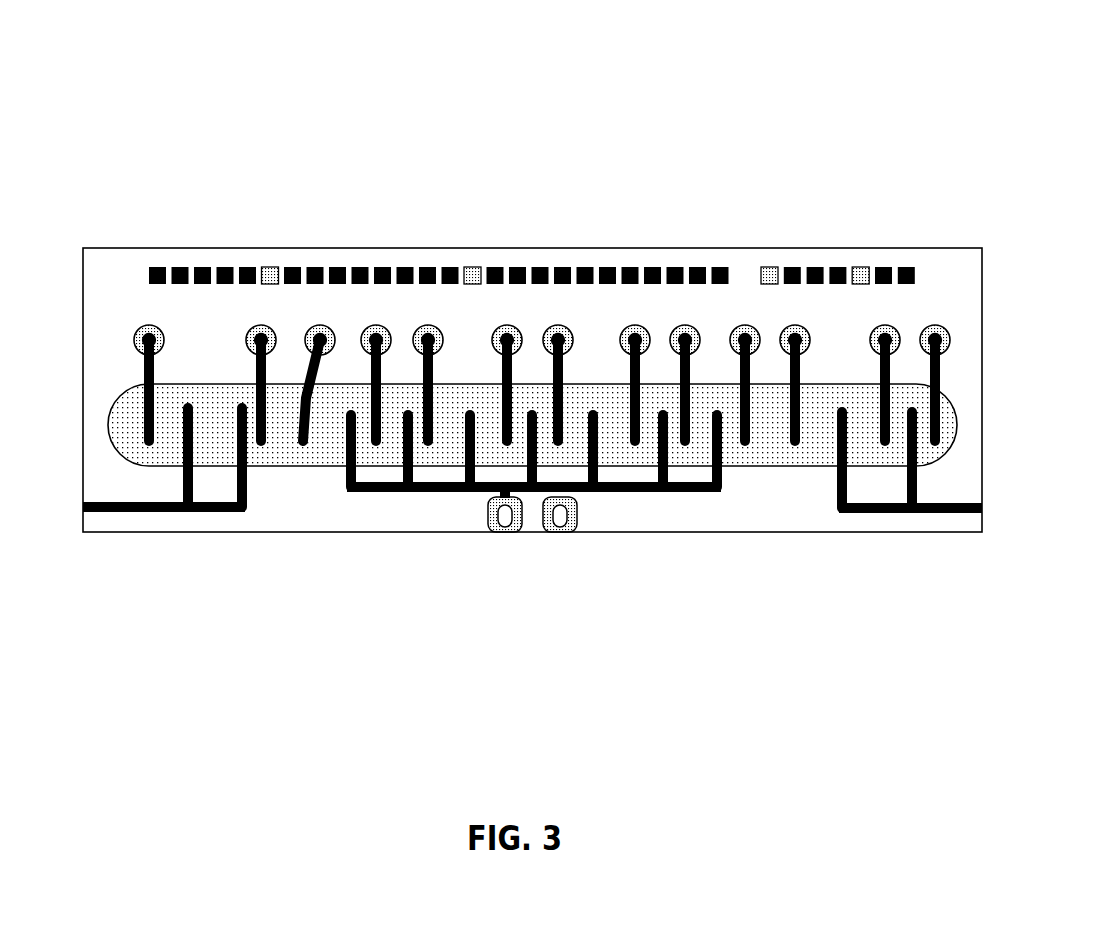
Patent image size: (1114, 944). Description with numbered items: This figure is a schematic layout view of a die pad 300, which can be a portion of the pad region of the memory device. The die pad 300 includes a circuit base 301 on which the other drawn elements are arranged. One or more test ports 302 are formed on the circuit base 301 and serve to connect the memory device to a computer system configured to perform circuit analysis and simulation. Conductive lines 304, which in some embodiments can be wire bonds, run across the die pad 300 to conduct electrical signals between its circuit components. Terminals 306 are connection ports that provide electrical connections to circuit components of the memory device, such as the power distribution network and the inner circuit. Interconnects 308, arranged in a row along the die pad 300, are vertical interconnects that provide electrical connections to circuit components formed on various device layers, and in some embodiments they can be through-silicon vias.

The die pad 300 is at (1013, 117).
The circuit base 301 is at (105, 247).
The test ports 302 is at (492, 523).
The conductive lines 304 is at (347, 477).
The terminals 306 is at (247, 331).
The interconnects 308 is at (268, 266).